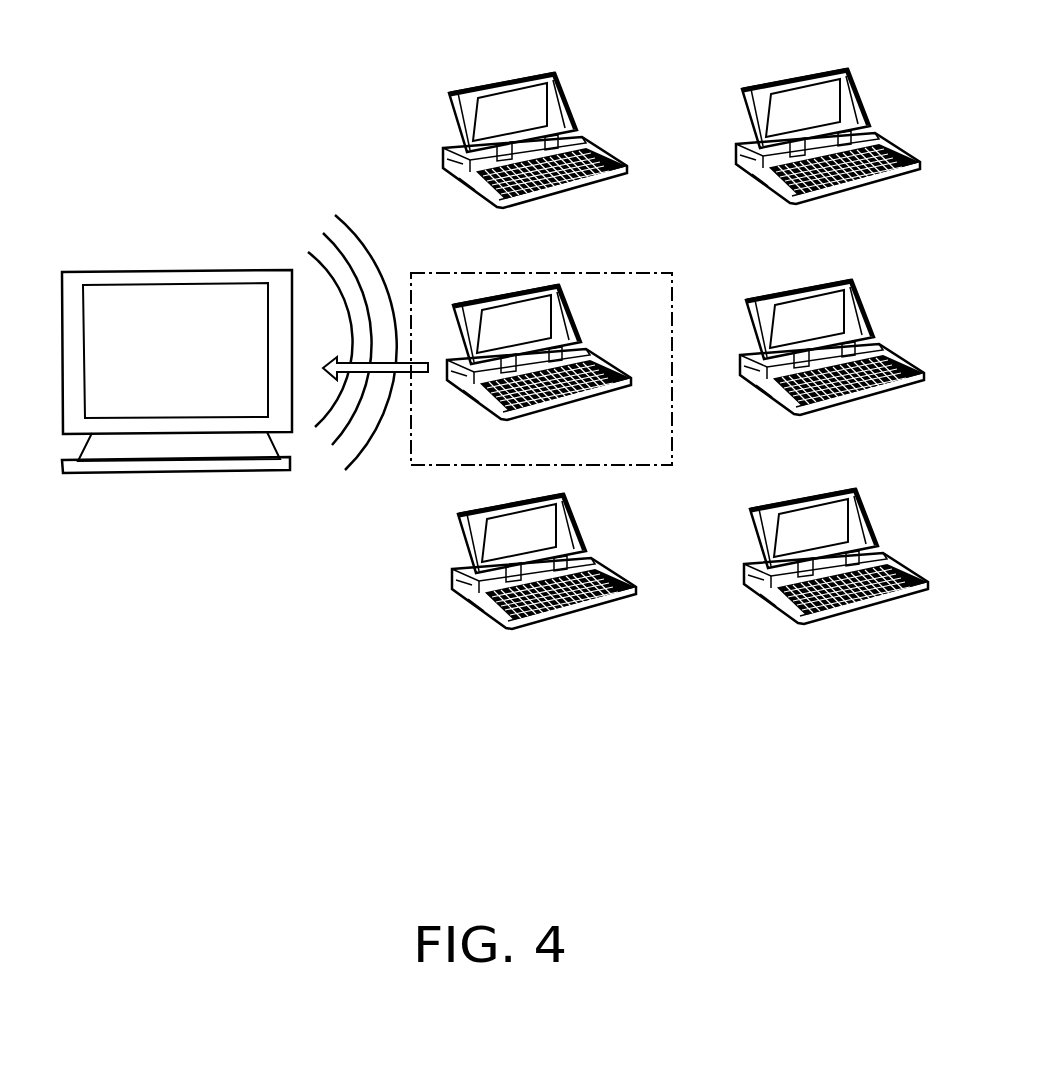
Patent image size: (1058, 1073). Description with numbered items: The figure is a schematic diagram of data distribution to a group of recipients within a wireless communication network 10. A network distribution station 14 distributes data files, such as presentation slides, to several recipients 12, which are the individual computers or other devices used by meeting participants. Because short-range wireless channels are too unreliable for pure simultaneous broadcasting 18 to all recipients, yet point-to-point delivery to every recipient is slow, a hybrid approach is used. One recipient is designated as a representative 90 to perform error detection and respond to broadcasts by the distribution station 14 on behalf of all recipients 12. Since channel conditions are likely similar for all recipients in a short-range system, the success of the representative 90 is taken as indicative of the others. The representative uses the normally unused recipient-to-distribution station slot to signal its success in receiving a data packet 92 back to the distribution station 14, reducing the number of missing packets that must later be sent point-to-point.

The wireless communication network 10 is at (336, 144).
The recipients 12 is at (743, 87).
The network distribution station 14 is at (125, 270).
The broadcasting 18 is at (323, 228).
The representative recipient 90 is at (458, 473).
The signal of success in receiving a data packet 92 is at (340, 360).